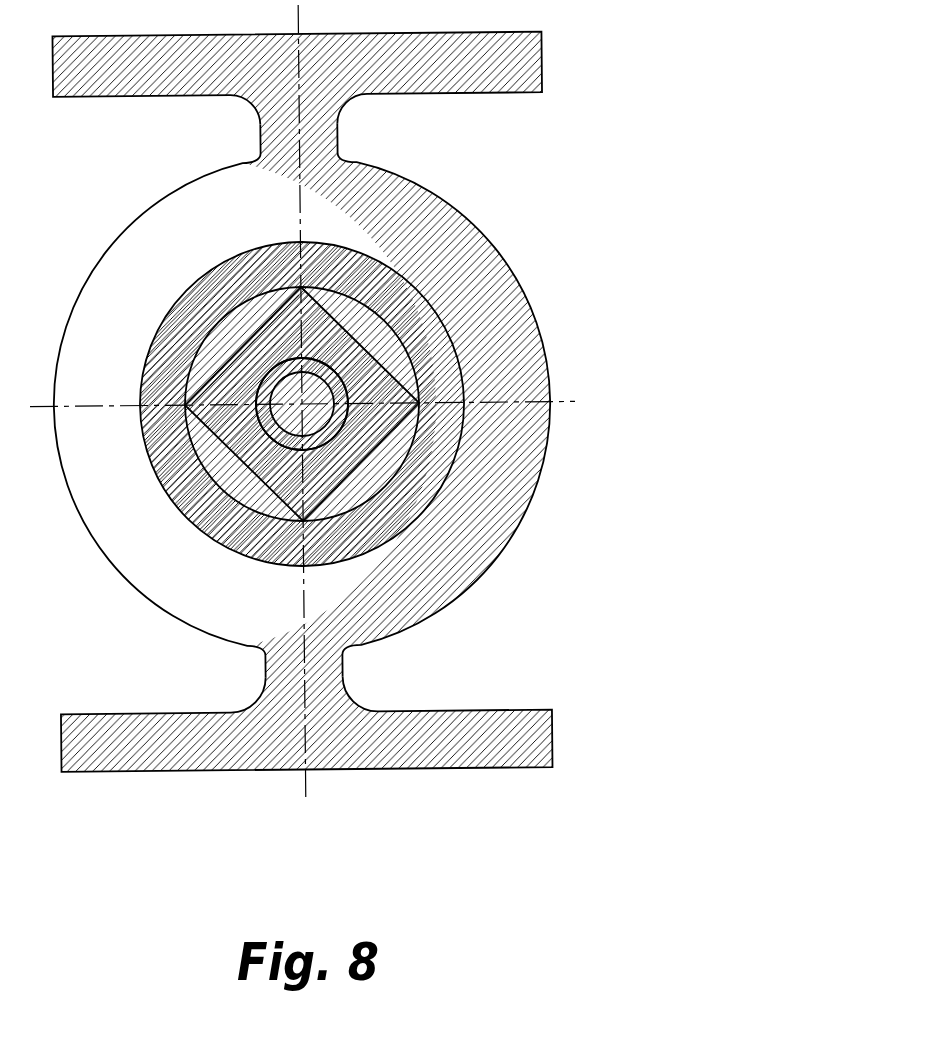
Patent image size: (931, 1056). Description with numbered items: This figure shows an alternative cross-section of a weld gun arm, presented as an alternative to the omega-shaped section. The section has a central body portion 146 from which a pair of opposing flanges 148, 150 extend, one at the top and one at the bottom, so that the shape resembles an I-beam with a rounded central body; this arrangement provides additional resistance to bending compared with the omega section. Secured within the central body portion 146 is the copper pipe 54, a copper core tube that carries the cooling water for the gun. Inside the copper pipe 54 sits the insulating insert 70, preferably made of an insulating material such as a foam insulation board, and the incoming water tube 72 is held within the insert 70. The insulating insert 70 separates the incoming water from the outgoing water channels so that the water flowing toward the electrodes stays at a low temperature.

The central body portion 146 is at (508, 510).
The flange 148 is at (492, 92).
The flange 150 is at (552, 733).
The copper pipe 54 is at (455, 447).
The incoming water tube 72 is at (330, 308).
The insulating insert 70 is at (390, 377).